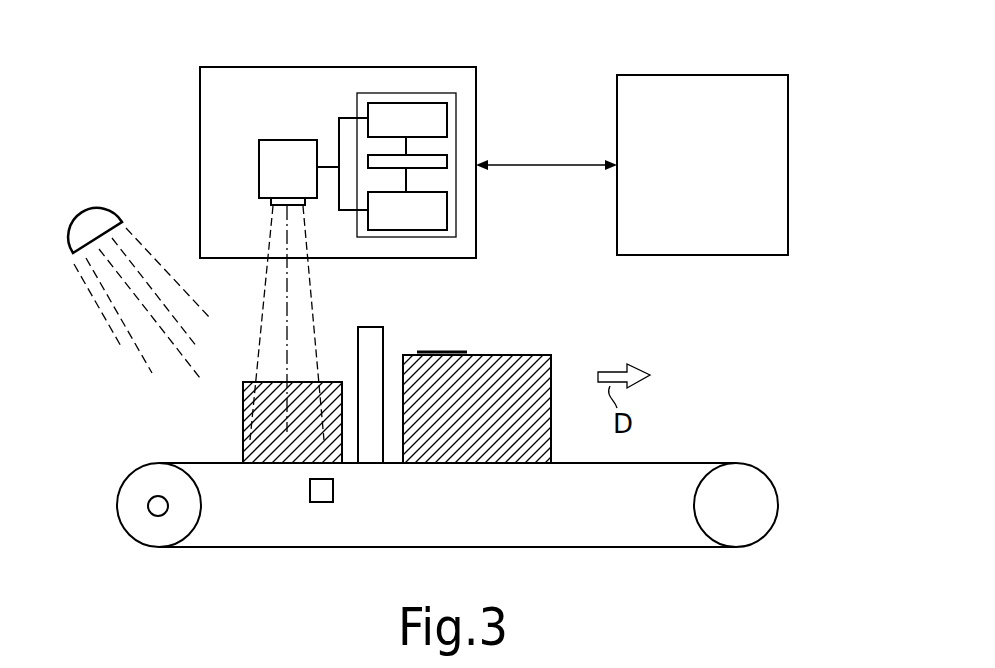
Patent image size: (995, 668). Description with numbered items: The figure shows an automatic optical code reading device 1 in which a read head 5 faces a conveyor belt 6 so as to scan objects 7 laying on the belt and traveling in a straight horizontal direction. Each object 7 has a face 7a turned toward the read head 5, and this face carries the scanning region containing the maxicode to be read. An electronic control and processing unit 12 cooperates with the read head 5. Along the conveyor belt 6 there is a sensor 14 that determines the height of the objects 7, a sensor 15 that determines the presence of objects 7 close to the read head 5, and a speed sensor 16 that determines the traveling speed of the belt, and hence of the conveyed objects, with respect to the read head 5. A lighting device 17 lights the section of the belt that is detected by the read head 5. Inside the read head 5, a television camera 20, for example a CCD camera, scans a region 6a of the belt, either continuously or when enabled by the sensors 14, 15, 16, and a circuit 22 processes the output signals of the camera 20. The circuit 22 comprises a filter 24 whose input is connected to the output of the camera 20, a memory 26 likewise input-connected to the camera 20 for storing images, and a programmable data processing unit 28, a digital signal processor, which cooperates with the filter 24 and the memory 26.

The automatic optical code reading device 1 is at (99, 68).
The read head 5 is at (361, 60).
The conveyor belt 6 is at (680, 460).
The region of the belt 6a is at (287, 465).
The object 7 is at (266, 443).
The face of the object 7a is at (271, 380).
The electronic control and processing unit 12 is at (776, 234).
The height sensor 14 is at (364, 327).
The presence sensor 15 is at (327, 502).
The speed sensor 16 is at (153, 511).
The lighting device 17 is at (87, 226).
The television camera 20 is at (269, 192).
The processing circuit 22 is at (452, 93).
The filter 24 is at (435, 209).
The memory 26 is at (370, 108).
The programmable data processing unit 28 is at (440, 162).